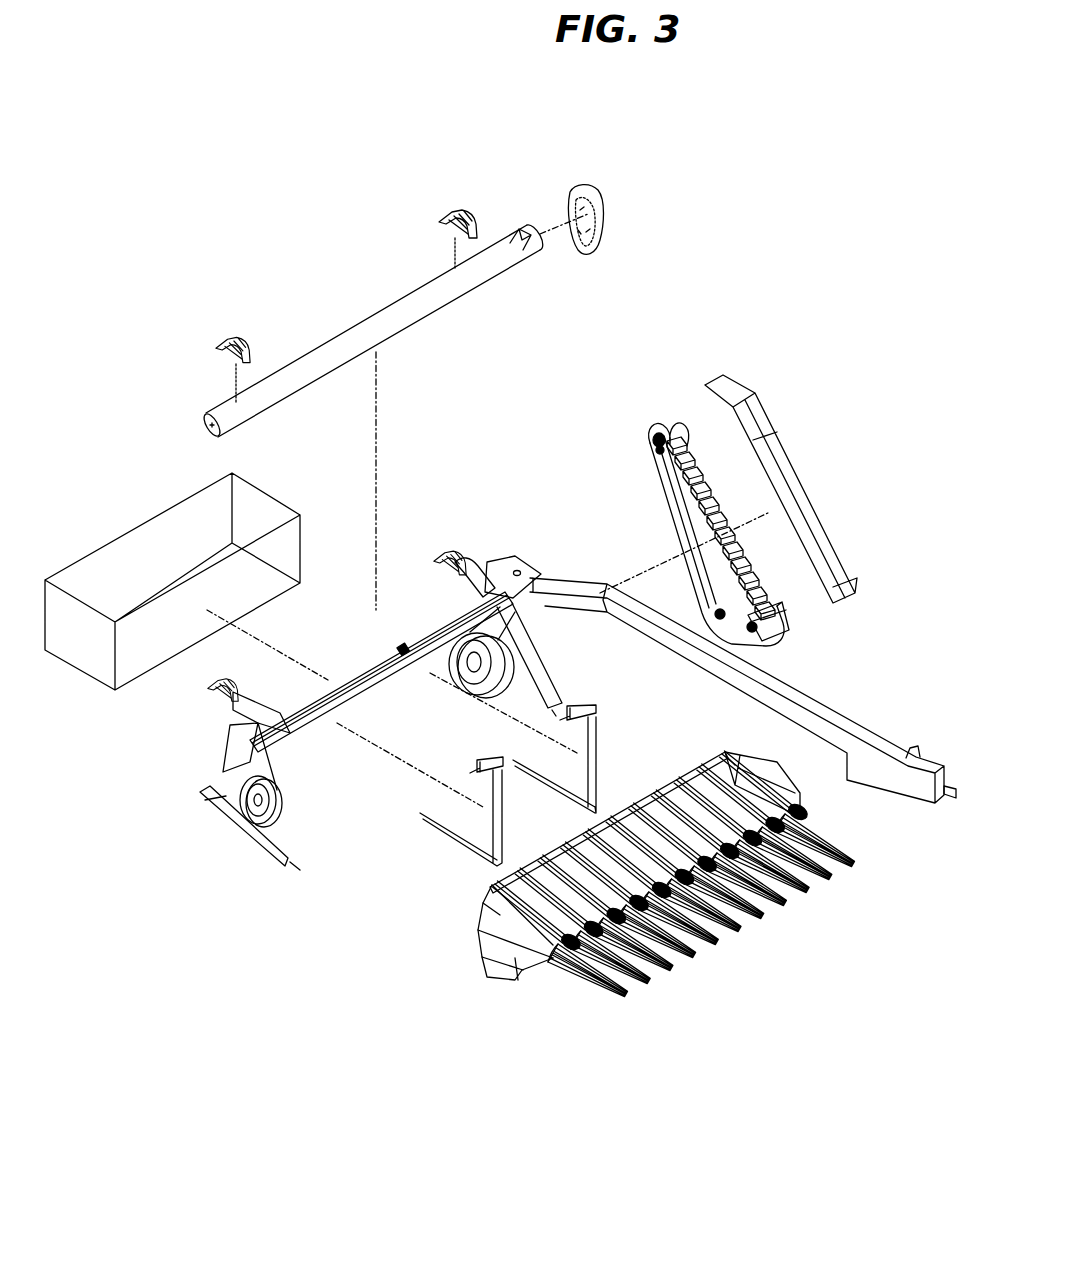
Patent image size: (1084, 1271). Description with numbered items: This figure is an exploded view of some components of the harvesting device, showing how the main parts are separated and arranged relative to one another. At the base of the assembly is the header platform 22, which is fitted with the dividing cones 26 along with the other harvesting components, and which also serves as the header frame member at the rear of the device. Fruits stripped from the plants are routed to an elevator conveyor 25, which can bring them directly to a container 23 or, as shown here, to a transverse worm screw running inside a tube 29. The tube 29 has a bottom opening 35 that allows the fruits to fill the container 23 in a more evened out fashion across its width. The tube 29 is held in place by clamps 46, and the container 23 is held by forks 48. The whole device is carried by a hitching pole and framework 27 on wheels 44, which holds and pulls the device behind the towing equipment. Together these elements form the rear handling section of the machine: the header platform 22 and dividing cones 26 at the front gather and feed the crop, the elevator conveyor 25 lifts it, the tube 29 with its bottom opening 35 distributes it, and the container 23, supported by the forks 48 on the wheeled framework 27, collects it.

The header platform 22 is at (477, 953).
The container 23 is at (173, 647).
The elevator conveyor 25 is at (673, 515).
The dividing cones 26 is at (567, 980).
The hitching pole and framework 27 is at (827, 727).
The tube 29 is at (423, 303).
The bottom opening 35 is at (426, 330).
The wheels 44 is at (282, 803).
The clamps 46 is at (255, 356).
The forks 48 is at (447, 832).